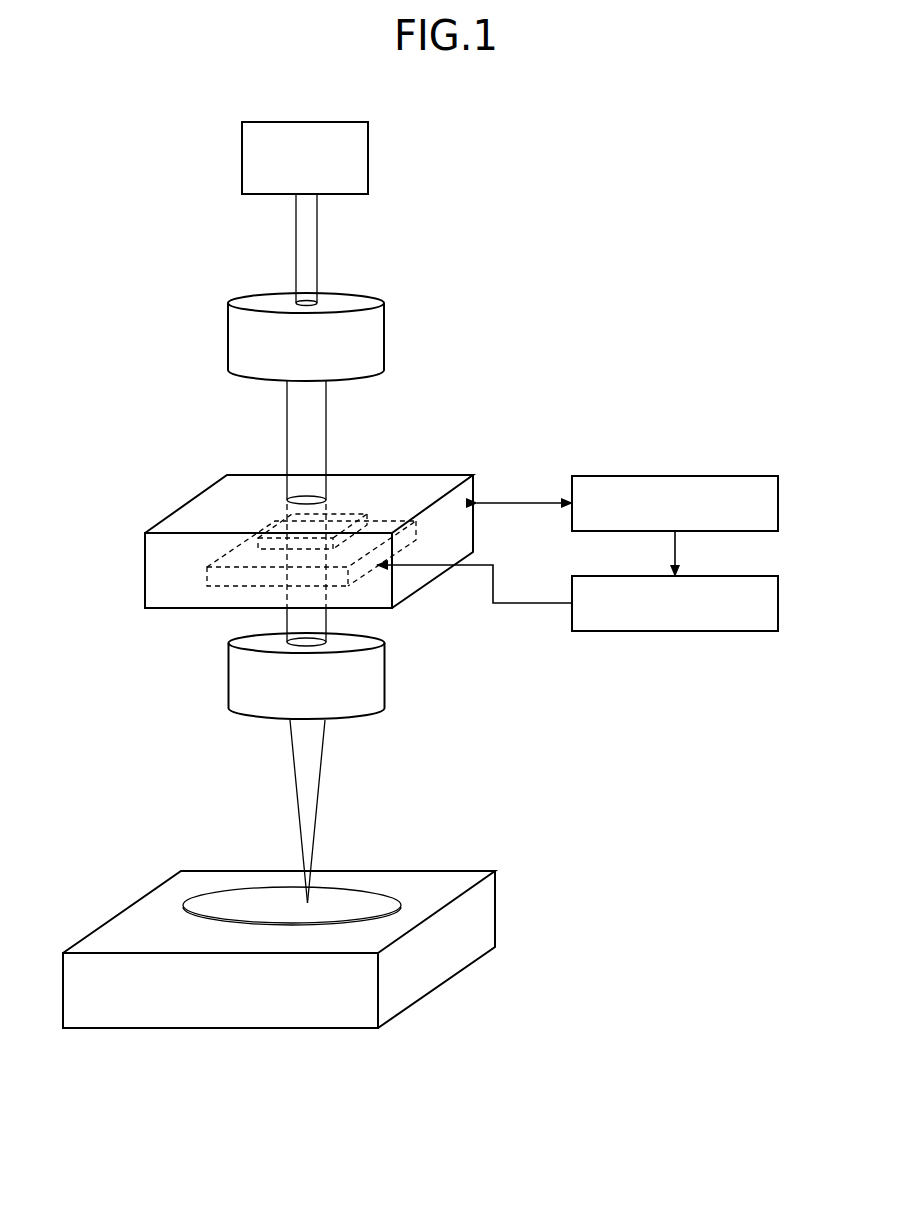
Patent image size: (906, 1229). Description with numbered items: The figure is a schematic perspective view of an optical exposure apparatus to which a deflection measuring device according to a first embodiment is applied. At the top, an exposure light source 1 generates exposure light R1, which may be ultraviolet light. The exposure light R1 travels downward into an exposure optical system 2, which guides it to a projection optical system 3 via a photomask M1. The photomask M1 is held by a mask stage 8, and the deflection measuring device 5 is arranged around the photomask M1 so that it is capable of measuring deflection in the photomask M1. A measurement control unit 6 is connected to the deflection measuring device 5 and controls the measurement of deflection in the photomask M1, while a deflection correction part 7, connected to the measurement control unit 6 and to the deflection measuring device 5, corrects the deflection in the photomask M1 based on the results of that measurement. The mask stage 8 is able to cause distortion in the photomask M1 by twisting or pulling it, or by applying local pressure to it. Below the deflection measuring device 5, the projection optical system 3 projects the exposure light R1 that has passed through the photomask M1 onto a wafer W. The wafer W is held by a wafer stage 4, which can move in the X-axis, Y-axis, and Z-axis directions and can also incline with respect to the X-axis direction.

The exposure light source 1 is at (368, 160).
The exposure light R1 is at (317, 238).
The exposure optical system 2 is at (384, 330).
The deflection measuring device 5 is at (473, 475).
The mask stage 8 is at (233, 533).
The photomask M1 is at (353, 513).
The measurement control unit 6 is at (778, 500).
The deflection correction part 7 is at (778, 603).
The projection optical system 3 is at (385, 665).
The wafer W is at (374, 892).
The wafer stage 4 is at (495, 900).